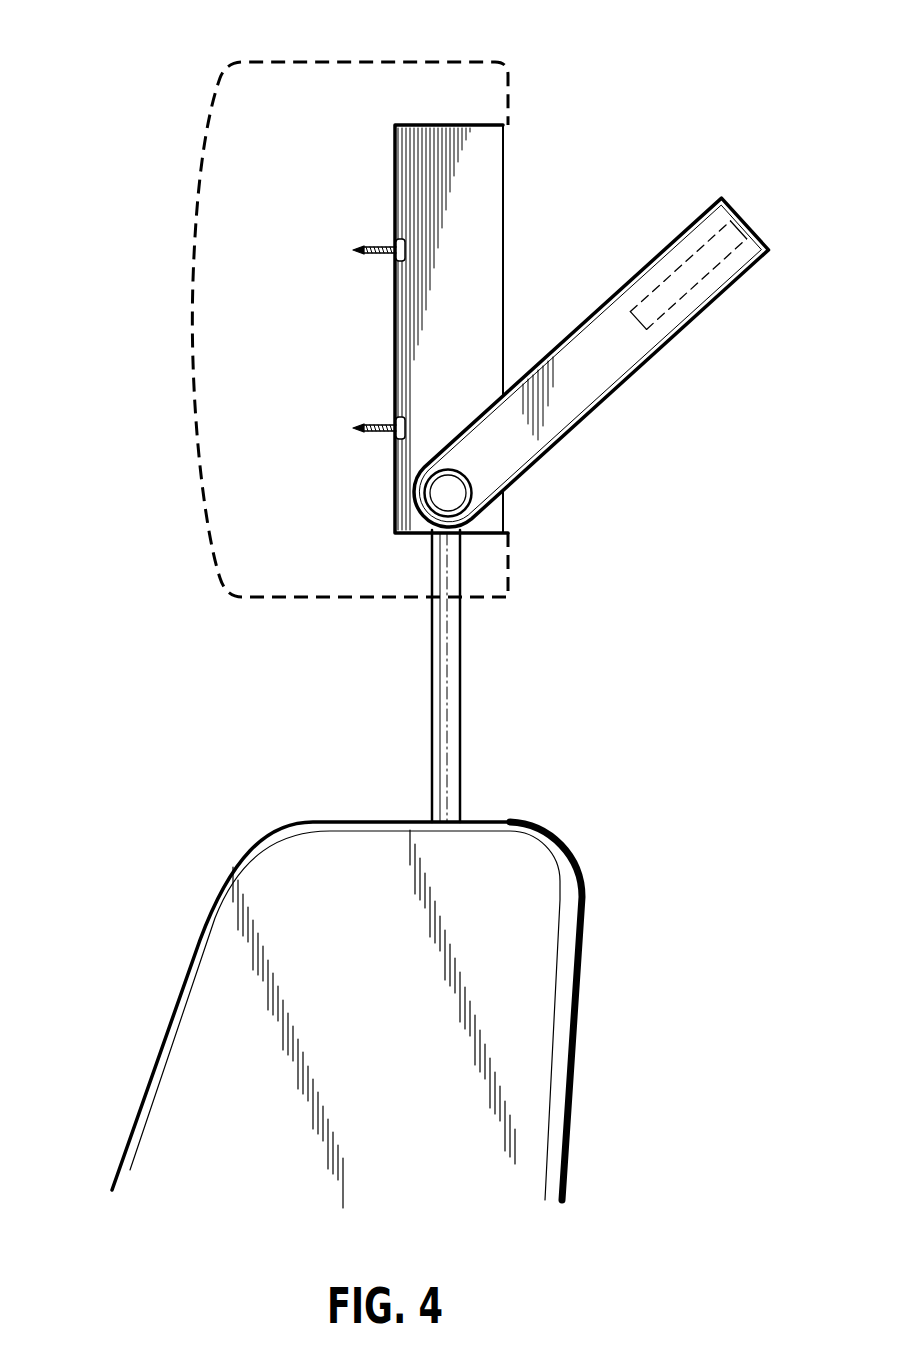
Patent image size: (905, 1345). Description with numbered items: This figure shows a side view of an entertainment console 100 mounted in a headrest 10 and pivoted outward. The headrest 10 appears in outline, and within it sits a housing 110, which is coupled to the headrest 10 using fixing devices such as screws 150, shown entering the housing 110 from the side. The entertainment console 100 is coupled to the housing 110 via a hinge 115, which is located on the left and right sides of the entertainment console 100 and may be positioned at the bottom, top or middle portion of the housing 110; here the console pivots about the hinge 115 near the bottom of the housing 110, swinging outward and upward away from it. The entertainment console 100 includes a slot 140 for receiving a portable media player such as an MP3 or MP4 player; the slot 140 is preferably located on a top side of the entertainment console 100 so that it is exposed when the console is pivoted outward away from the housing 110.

The headrest 10 is at (327, 90).
The housing 110 is at (440, 123).
The screws 150 is at (405, 248).
The entertainment console 100 is at (603, 362).
The slot 140 is at (708, 276).
The hinge 115 is at (449, 497).